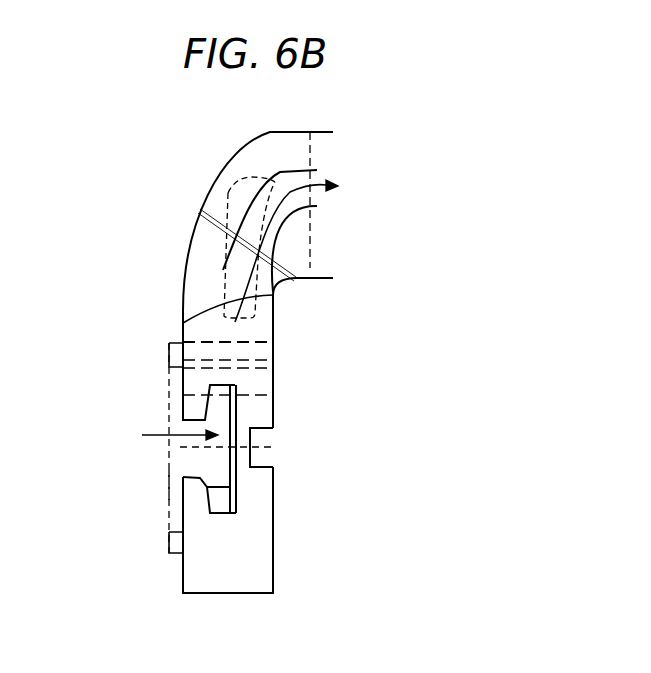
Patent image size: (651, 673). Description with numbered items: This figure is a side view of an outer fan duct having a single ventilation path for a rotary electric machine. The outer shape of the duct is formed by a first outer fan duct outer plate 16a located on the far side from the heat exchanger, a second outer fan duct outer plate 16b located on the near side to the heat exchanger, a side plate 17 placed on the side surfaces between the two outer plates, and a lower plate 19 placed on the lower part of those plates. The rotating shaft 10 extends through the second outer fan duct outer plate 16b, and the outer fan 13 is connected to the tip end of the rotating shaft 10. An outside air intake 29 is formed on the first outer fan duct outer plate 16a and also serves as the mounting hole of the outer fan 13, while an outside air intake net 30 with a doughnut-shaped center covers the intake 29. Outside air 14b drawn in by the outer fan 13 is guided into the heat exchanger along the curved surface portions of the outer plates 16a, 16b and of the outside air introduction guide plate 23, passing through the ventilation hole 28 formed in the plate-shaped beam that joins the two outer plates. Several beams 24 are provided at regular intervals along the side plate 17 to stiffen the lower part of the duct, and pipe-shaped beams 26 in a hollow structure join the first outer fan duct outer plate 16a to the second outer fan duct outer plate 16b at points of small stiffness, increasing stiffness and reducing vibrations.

The rotating shaft 10 is at (313, 432).
The outer fan 13 is at (237, 415).
The flow of outside air 14b is at (170, 343).
The first outer fan duct outer plate 16a is at (182, 300).
The second outer fan duct outer plate 16b is at (278, 512).
The side plate 17 is at (262, 563).
The lower plate 19 is at (228, 595).
The outside air introduction guide plate 23 is at (276, 242).
The beam 24 is at (257, 338).
The pipe-shaped beam 26 is at (262, 360).
The ventilation hole 28 is at (270, 297).
The outside air intake 29 is at (182, 444).
The outside air intake net 30 is at (170, 482).